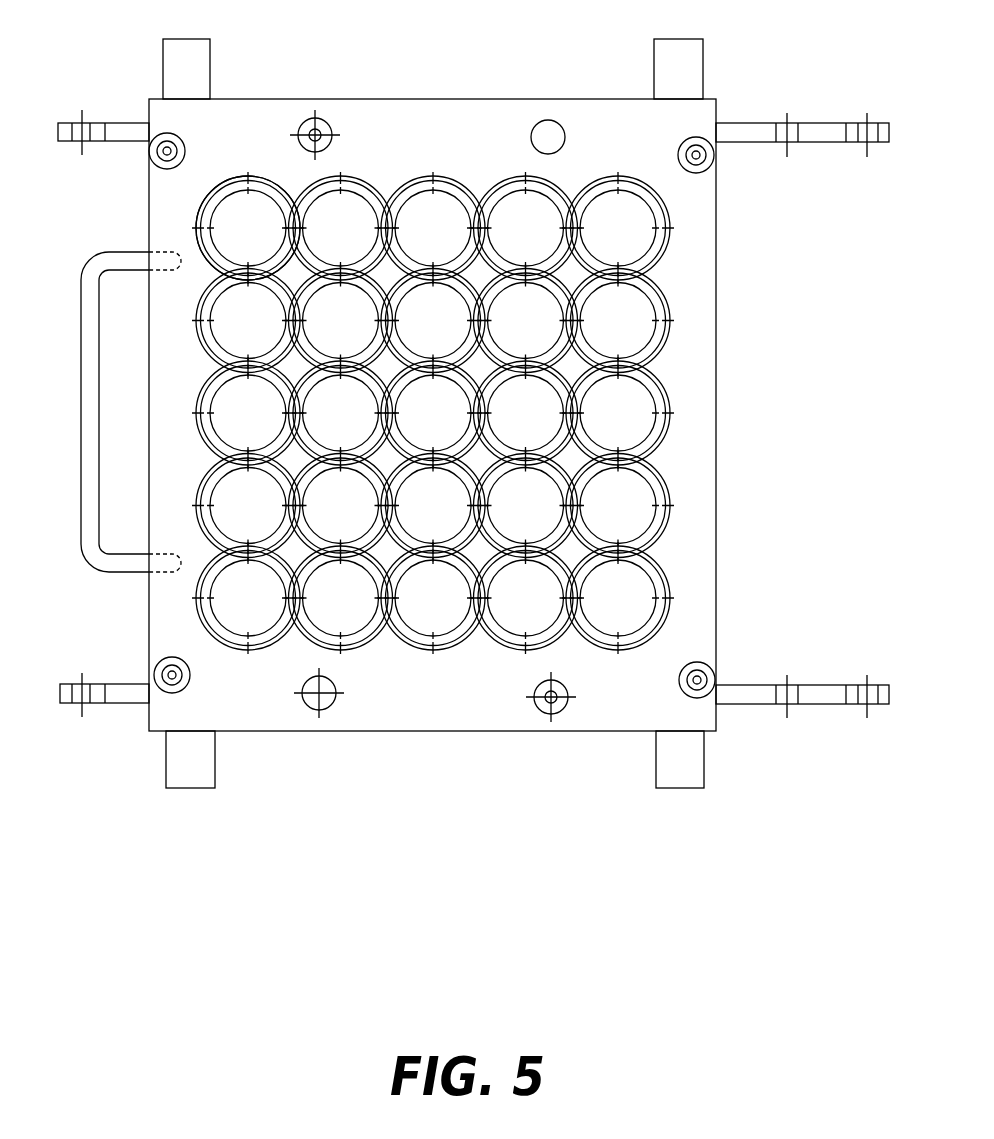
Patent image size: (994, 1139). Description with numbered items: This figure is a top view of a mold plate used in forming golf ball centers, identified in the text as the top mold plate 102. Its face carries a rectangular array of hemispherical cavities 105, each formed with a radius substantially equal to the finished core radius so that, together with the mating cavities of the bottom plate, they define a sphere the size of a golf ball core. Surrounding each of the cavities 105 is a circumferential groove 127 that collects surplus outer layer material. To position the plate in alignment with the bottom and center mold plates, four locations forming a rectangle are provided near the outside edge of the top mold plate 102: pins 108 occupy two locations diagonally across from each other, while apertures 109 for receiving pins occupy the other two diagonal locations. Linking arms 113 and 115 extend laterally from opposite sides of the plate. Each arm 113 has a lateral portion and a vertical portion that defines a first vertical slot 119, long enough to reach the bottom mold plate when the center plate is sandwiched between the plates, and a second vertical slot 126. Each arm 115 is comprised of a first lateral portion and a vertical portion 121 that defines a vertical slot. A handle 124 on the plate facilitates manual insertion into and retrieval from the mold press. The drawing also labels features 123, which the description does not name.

The top mold plate 102 is at (417, 78).
The cavities 105 is at (233, 227).
The pins 108 is at (328, 132).
The apertures 109 is at (561, 138).
The linking arms 113 is at (823, 122).
The linking arms 115 is at (126, 120).
The first vertical slot 119 is at (870, 123).
The vertical portion 121 is at (73, 142).
The fastener head 123 is at (150, 151).
The handles 124 is at (83, 562).
The second vertical slot 126 is at (790, 143).
The circumferential groove 127 is at (258, 185).